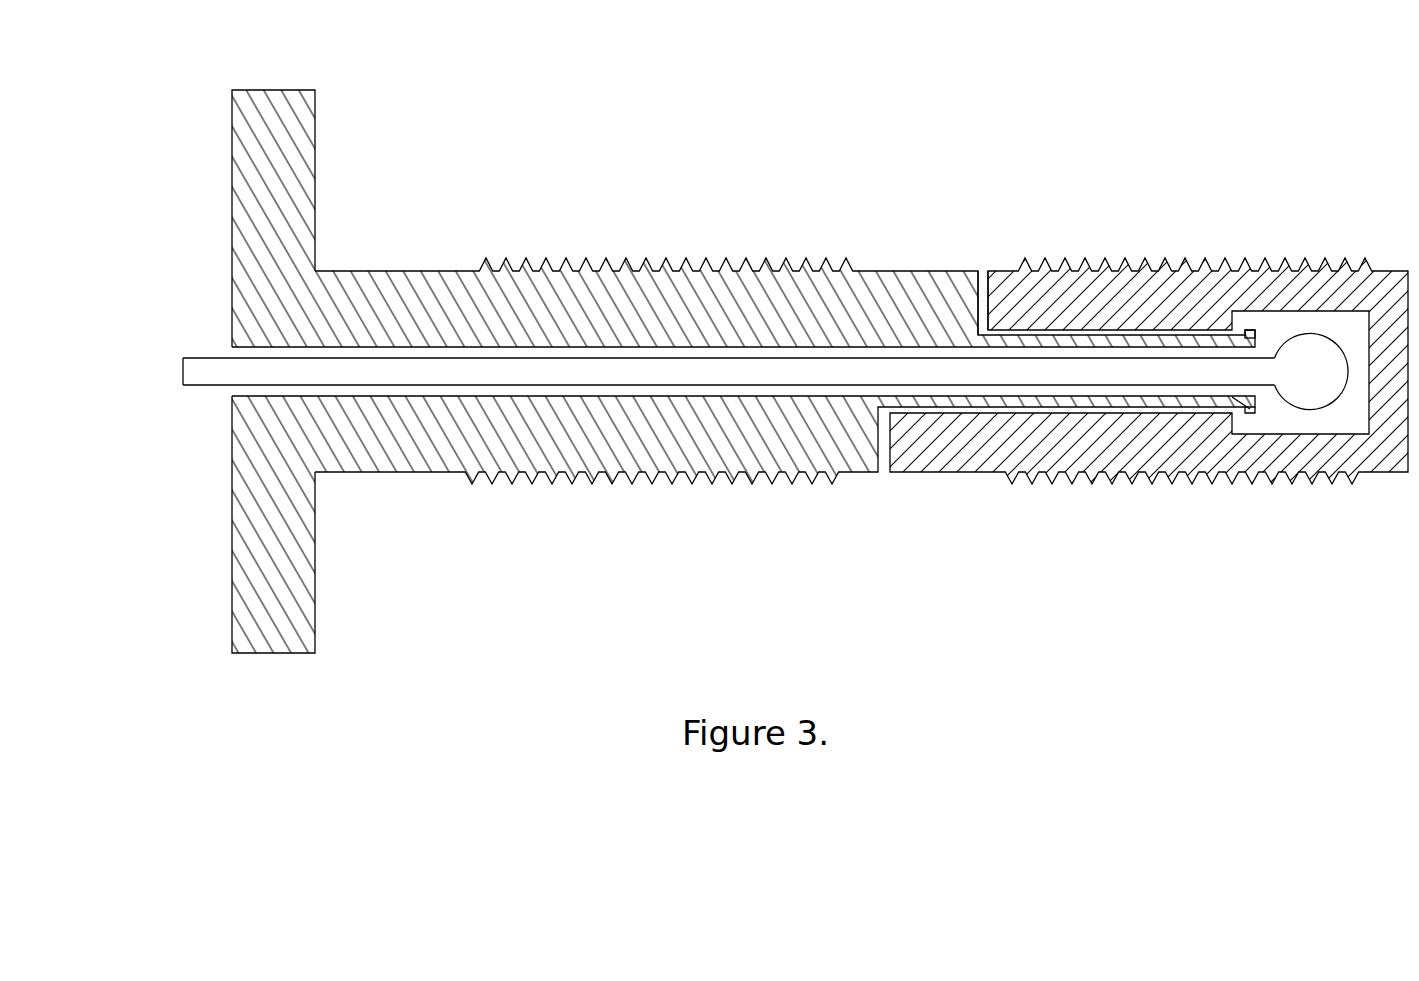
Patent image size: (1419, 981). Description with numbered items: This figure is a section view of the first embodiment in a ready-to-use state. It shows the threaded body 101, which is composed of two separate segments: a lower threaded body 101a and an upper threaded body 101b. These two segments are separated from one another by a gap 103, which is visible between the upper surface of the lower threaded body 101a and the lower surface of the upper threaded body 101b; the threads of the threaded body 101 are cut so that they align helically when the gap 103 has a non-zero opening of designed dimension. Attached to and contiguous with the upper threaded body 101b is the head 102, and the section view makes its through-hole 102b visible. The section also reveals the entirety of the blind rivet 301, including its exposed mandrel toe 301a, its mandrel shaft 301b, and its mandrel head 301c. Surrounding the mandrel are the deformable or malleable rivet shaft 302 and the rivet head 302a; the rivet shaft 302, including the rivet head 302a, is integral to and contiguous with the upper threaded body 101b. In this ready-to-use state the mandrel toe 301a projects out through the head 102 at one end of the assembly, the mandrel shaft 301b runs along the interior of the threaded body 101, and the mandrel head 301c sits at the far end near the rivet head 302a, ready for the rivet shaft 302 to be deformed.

The threaded body 101 is at (755, 371).
The lower threaded body 101a is at (1172, 270).
The upper threaded body 101b is at (713, 271).
The head 102 is at (208, 371).
The through-hole 102b is at (232, 388).
The gap 103 is at (983, 272).
The blind rivet 301 is at (705, 434).
The mandrel toe 301a is at (190, 372).
The mandrel shaft 301b is at (729, 371).
The mandrel head 301c is at (1312, 372).
The rivet shaft 302 is at (1232, 408).
The rivet head 302a is at (1257, 338).